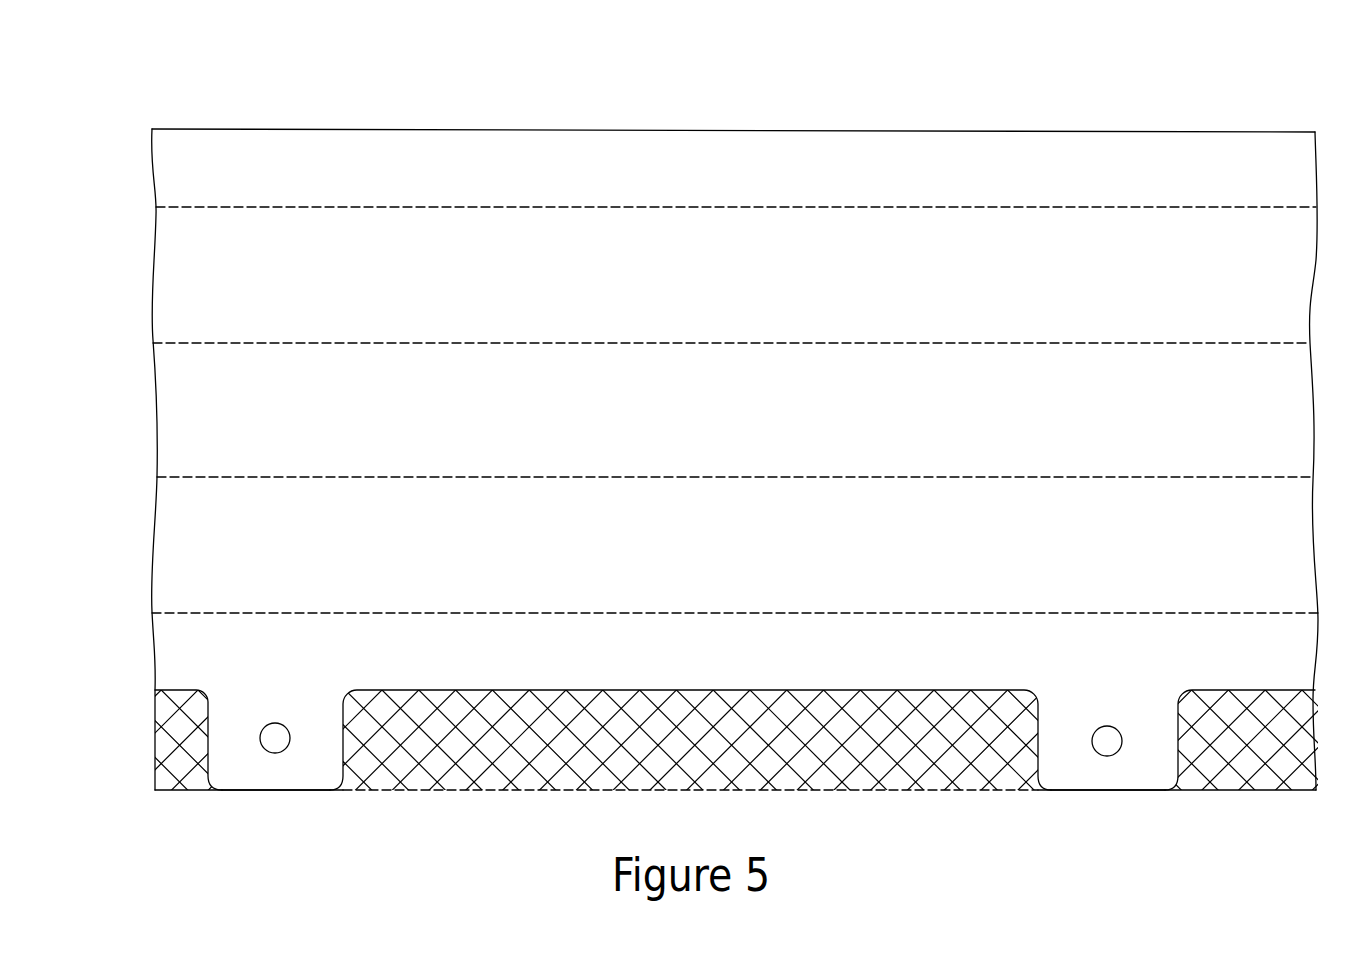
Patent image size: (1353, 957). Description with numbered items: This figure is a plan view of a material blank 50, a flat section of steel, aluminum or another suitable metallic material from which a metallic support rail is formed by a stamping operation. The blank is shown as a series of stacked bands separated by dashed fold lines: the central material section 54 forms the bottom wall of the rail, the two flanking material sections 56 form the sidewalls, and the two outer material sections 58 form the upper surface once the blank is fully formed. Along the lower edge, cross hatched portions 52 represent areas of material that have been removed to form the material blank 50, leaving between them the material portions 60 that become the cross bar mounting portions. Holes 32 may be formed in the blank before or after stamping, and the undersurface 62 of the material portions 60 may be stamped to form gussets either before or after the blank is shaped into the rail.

The material blank 50 is at (160, 100).
The cross hatched portions 52 is at (177, 770).
The material section 54 is at (706, 422).
The material sections 56 is at (706, 288).
The material sections 58 is at (706, 182).
The holes 32 is at (268, 750).
The material portions 60 is at (312, 765).
The undersurface 62 is at (295, 777).